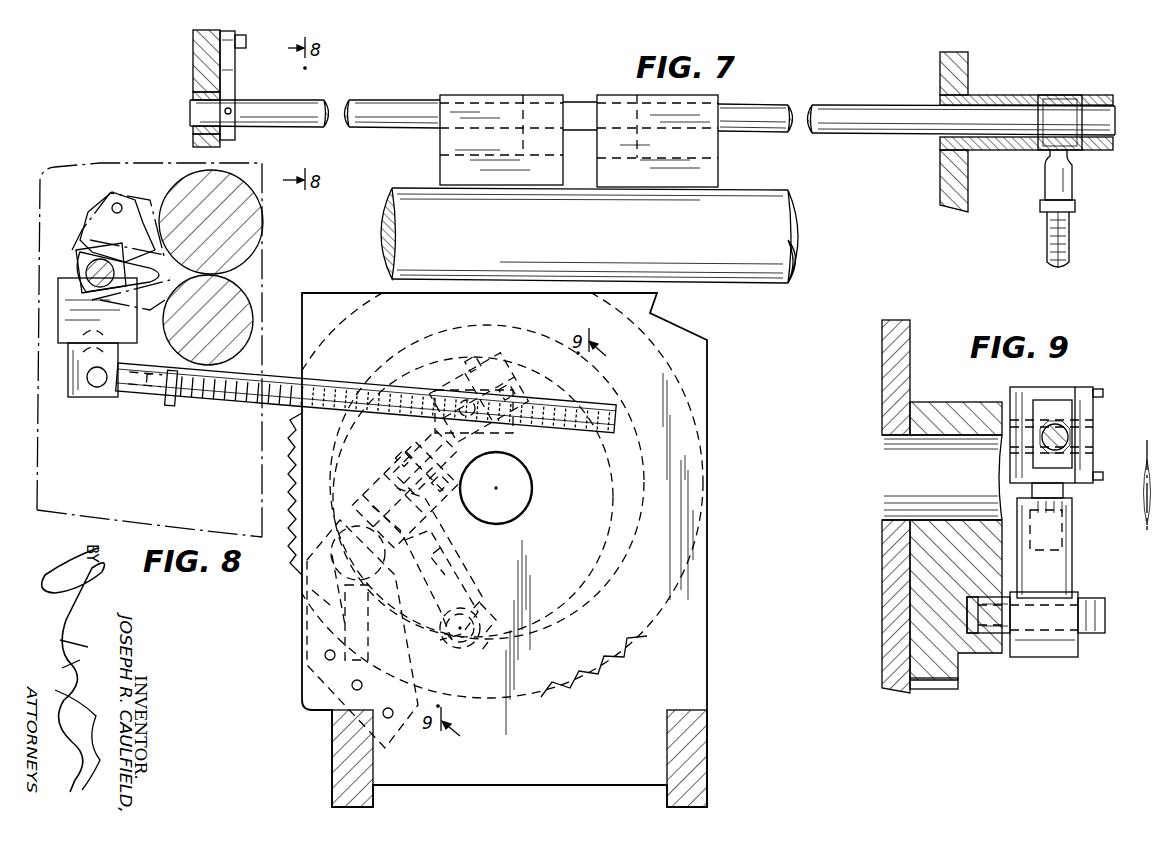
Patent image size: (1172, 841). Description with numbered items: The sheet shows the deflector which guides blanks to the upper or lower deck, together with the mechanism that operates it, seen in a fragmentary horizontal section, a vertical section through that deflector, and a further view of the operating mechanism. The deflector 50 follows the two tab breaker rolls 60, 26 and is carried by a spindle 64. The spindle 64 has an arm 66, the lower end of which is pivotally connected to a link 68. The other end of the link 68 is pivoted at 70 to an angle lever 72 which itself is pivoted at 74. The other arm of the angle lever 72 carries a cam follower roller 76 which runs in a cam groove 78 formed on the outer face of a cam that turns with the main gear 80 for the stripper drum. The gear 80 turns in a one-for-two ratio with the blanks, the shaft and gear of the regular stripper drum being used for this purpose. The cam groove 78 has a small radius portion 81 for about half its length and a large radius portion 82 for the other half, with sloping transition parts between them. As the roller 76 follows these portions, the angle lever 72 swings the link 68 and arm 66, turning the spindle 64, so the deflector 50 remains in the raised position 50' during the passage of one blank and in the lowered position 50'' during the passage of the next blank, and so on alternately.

In FIG. 7, the tab breaker roll 26 is at (795, 228).
In FIG. 8, the tab breaker roll 26 is at (248, 304).
In FIG. 9, the tab breaker roll 26 is at (942, 477).
In FIG. 7, the deflector 50 is at (600, 141).
In FIG. 8, the deflector 50 is at (124, 271).
In FIG. 8, the raised position of deflector 50' is at (118, 219).
In FIG. 8, the lowered position of deflector 50'' is at (135, 319).
In FIG. 8, the tab breaker roll 60 is at (256, 238).
In FIG. 7, the spindle 64 is at (852, 108).
In FIG. 8, the spindle 64 is at (78, 268).
In FIG. 7, the arm 66 is at (1062, 100).
In FIG. 8, the arm 66 is at (70, 362).
In FIG. 7, the link 68 is at (1073, 258).
In FIG. 8, the link 68 is at (232, 400).
In FIG. 9, the link 68 is at (1070, 437).
In FIG. 8, the pivot 70 is at (465, 380).
In FIG. 9, the pivot 70 is at (1085, 525).
In FIG. 8, the angle lever 72 is at (416, 537).
In FIG. 9, the angle lever 72 is at (1070, 578).
In FIG. 8, the pivot 74 is at (373, 508).
In FIG. 9, the pivot 74 is at (1075, 646).
In FIG. 8, the cam follower roller 76 is at (478, 612).
In FIG. 9, the cam follower roller 76 is at (992, 624).
In FIG. 8, the cam groove 78 is at (536, 598).
In FIG. 9, the cam groove 78 is at (975, 600).
In FIG. 8, the main gear 80 is at (600, 656).
In FIG. 9, the main gear 80 is at (930, 690).
In FIG. 8, the small radius portion 81 is at (613, 504).
In FIG. 8, the large radius portion 82 is at (396, 452).